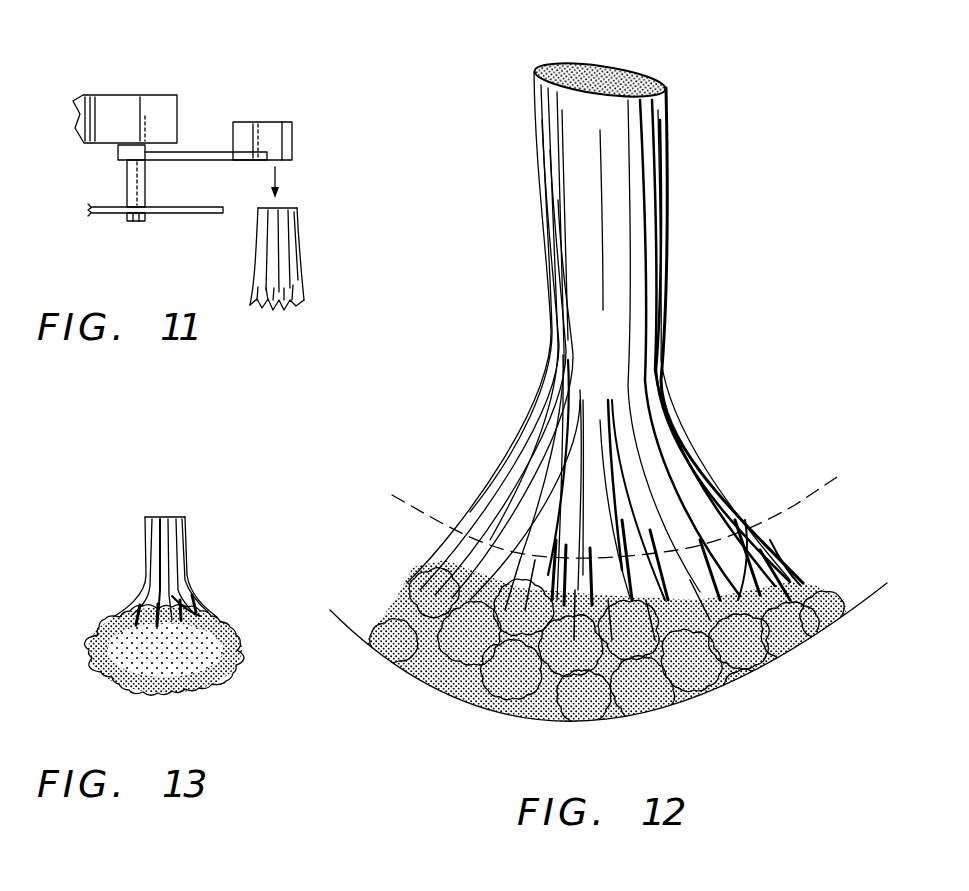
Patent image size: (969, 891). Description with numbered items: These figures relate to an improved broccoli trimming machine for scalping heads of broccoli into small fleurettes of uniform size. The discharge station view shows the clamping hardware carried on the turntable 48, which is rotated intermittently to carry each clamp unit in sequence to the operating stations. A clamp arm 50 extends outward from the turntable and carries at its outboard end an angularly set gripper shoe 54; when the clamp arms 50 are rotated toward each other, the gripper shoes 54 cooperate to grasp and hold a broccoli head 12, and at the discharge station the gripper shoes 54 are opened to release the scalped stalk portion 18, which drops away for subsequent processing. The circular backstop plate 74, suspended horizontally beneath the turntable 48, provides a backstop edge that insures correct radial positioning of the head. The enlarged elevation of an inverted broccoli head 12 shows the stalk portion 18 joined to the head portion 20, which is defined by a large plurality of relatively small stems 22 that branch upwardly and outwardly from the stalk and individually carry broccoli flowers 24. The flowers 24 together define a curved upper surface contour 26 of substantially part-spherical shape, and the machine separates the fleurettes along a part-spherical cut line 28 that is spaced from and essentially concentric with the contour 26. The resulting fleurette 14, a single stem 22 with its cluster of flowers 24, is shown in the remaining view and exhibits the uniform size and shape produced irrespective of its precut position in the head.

In FIG. 12, the broccoli head 12 is at (727, 337).
In FIG. 12, the fleurettes 14 is at (827, 557).
In FIG. 13, the fleurettes 14 is at (170, 603).
In FIG. 11, the stalk portion 18 is at (278, 241).
In FIG. 12, the stalk portion 18 is at (592, 202).
In FIG. 12, the head portion 20 is at (397, 603).
In FIG. 12, the stems 22 is at (738, 600).
In FIG. 13, the stems 22 is at (157, 542).
In FIG. 12, the broccoli flowers 24 is at (677, 720).
In FIG. 13, the broccoli flowers 24 is at (200, 677).
In FIG. 12, the curved upper surface contour 26 is at (860, 612).
In FIG. 12, the cut line 28 is at (795, 505).
In FIG. 11, the turntable 48 is at (118, 102).
In FIG. 11, the clamp arms 50 is at (208, 151).
In FIG. 11, the gripper shoes 54 is at (277, 137).
In FIG. 11, the backstop plate 74 is at (193, 215).